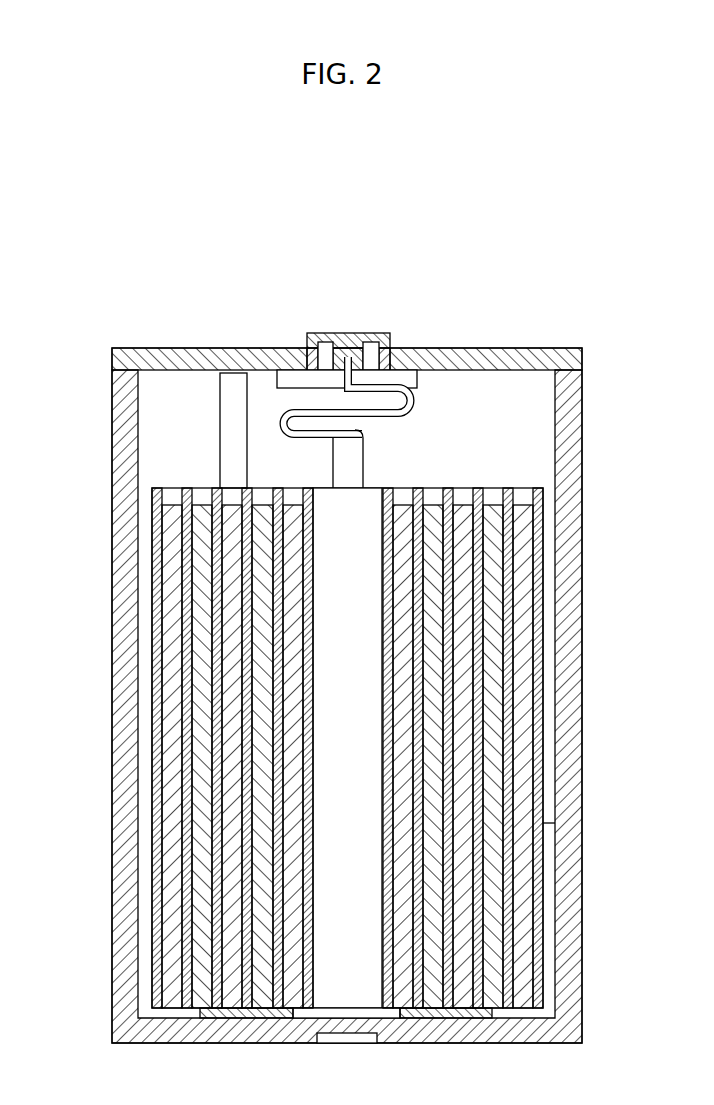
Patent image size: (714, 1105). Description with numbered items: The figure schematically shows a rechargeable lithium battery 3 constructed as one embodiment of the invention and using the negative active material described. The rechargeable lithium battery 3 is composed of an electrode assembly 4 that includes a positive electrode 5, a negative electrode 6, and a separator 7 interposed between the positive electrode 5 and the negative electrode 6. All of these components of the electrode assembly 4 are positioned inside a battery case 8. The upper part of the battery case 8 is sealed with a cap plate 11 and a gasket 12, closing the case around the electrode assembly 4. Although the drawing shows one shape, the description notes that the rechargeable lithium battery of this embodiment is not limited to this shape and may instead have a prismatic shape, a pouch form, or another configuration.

The rechargeable lithium battery 3 is at (335, 241).
The electrode assembly 4 is at (346, 715).
The positive electrode 5 is at (520, 863).
The negative electrode 6 is at (198, 890).
The separator 7 is at (180, 940).
The battery case 8 is at (113, 472).
The cap plate 11 is at (441, 348).
The gasket 12 is at (307, 333).